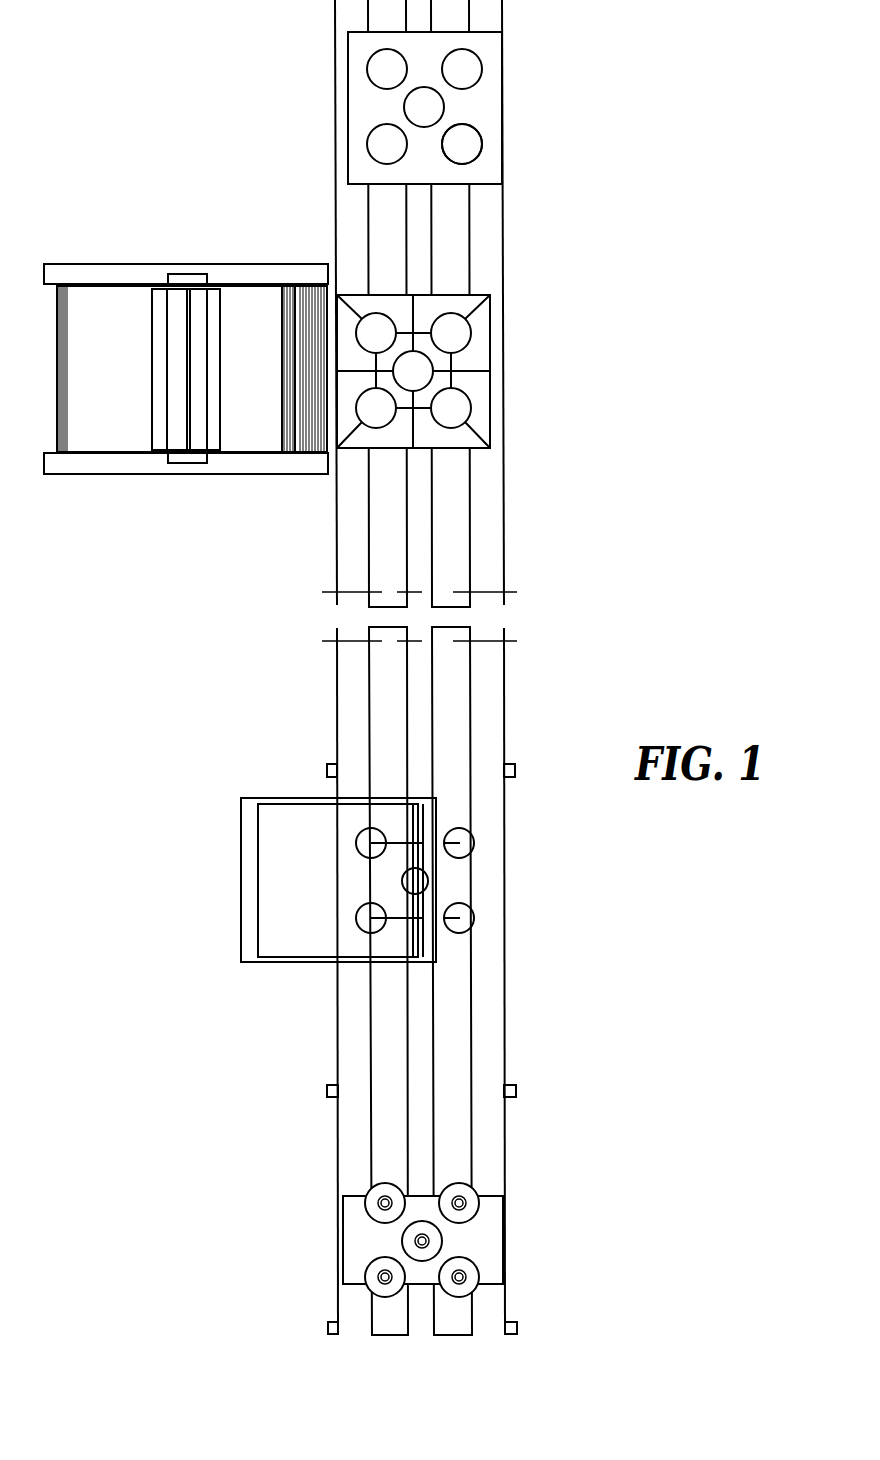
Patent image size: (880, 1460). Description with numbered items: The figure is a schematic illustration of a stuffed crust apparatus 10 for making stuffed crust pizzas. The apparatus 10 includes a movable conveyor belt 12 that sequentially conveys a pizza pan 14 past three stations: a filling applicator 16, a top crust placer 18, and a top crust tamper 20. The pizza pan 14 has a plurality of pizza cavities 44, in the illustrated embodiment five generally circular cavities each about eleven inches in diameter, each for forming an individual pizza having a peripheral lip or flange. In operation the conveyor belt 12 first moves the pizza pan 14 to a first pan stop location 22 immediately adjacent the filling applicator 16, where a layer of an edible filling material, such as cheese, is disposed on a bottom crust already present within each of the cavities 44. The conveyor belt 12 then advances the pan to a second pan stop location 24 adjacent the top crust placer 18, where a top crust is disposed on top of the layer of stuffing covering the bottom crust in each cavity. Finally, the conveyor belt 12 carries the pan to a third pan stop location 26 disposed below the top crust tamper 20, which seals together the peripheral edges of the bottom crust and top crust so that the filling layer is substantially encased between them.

The stuffed crust apparatus 10 is at (678, 448).
The conveyor belt 12 is at (490, 226).
The pizza pan 14 is at (490, 48).
The filling applicator 16 is at (138, 245).
The top crust placer 18 is at (200, 880).
The top crust tamper 20 is at (325, 1247).
The first pan stop location 22 is at (508, 448).
The second pan stop location 24 is at (508, 961).
The third pan stop location 26 is at (510, 1303).
The pizza cavities 44 is at (470, 142).